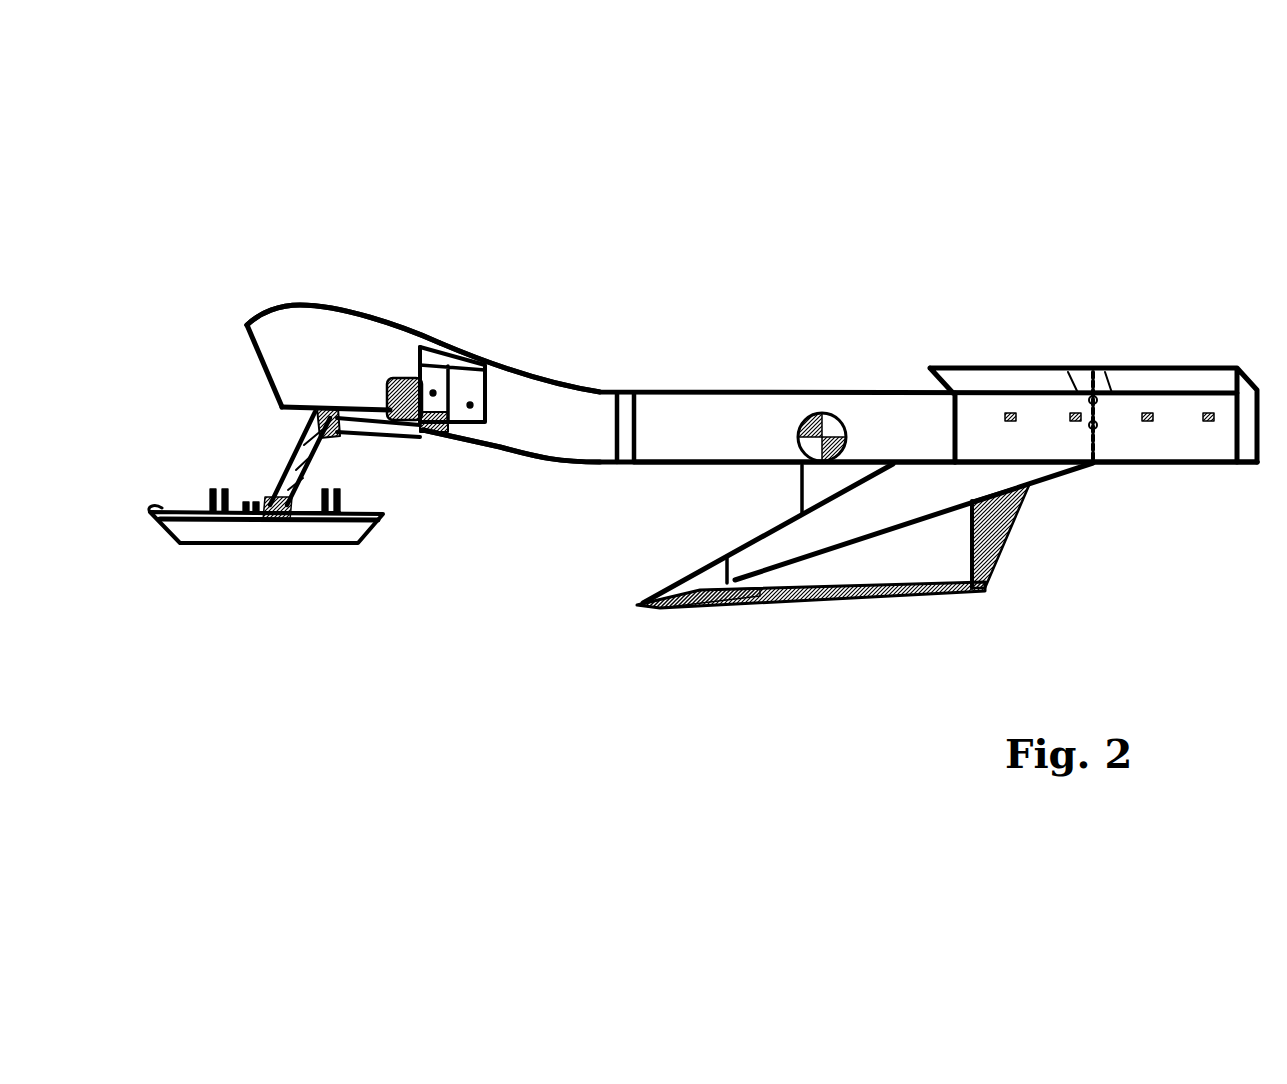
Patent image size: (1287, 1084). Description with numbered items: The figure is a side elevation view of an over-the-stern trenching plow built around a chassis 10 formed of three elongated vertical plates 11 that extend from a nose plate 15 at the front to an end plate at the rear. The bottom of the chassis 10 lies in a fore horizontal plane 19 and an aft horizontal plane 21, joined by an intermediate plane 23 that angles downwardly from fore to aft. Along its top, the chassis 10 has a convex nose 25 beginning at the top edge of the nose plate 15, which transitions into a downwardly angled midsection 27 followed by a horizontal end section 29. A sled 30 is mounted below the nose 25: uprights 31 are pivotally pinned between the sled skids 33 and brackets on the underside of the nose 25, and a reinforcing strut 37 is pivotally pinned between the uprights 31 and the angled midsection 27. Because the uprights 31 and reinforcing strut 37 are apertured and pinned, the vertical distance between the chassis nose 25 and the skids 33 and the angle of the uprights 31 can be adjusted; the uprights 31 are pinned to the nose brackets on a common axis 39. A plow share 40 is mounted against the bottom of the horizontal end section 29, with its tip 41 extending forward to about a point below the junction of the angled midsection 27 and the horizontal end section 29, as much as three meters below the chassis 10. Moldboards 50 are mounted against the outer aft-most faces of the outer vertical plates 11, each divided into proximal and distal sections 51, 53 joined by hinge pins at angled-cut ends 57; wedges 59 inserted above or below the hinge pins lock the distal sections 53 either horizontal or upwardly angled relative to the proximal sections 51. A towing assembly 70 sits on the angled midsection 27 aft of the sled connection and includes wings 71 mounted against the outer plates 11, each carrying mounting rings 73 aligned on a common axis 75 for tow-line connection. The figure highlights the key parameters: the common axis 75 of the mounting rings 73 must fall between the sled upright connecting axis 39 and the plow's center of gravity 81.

The chassis 10 is at (783, 310).
The elongated vertical plates 11 is at (277, 330).
The nose plate 15 is at (270, 373).
The fore horizontal plane 19 is at (303, 413).
The aft horizontal plane 21 is at (743, 453).
The intermediate plane 23 is at (513, 457).
The convex nose 25 is at (297, 305).
The downwardly angled midsection 27 is at (527, 383).
The horizontal end section 29 is at (702, 447).
The sled 30 is at (344, 591).
The uprights 31 is at (283, 472).
The sled skids 33 is at (272, 535).
The reinforcing strut 37 is at (418, 432).
The common axis 39 is at (395, 432).
The plow share 40 is at (798, 638).
The tip 41 is at (673, 580).
The moldboards 50 is at (1152, 565).
The proximal sections 51 is at (1030, 450).
The distal sections 53 is at (1193, 463).
The angled-cut ends 57 is at (1077, 400).
The wedges 59 is at (1087, 380).
The towing assembly 70 is at (544, 297).
The wings 71 is at (467, 390).
The mounting rings 73 is at (392, 380).
The common axis 75 is at (405, 395).
The center of gravity 81 is at (827, 427).